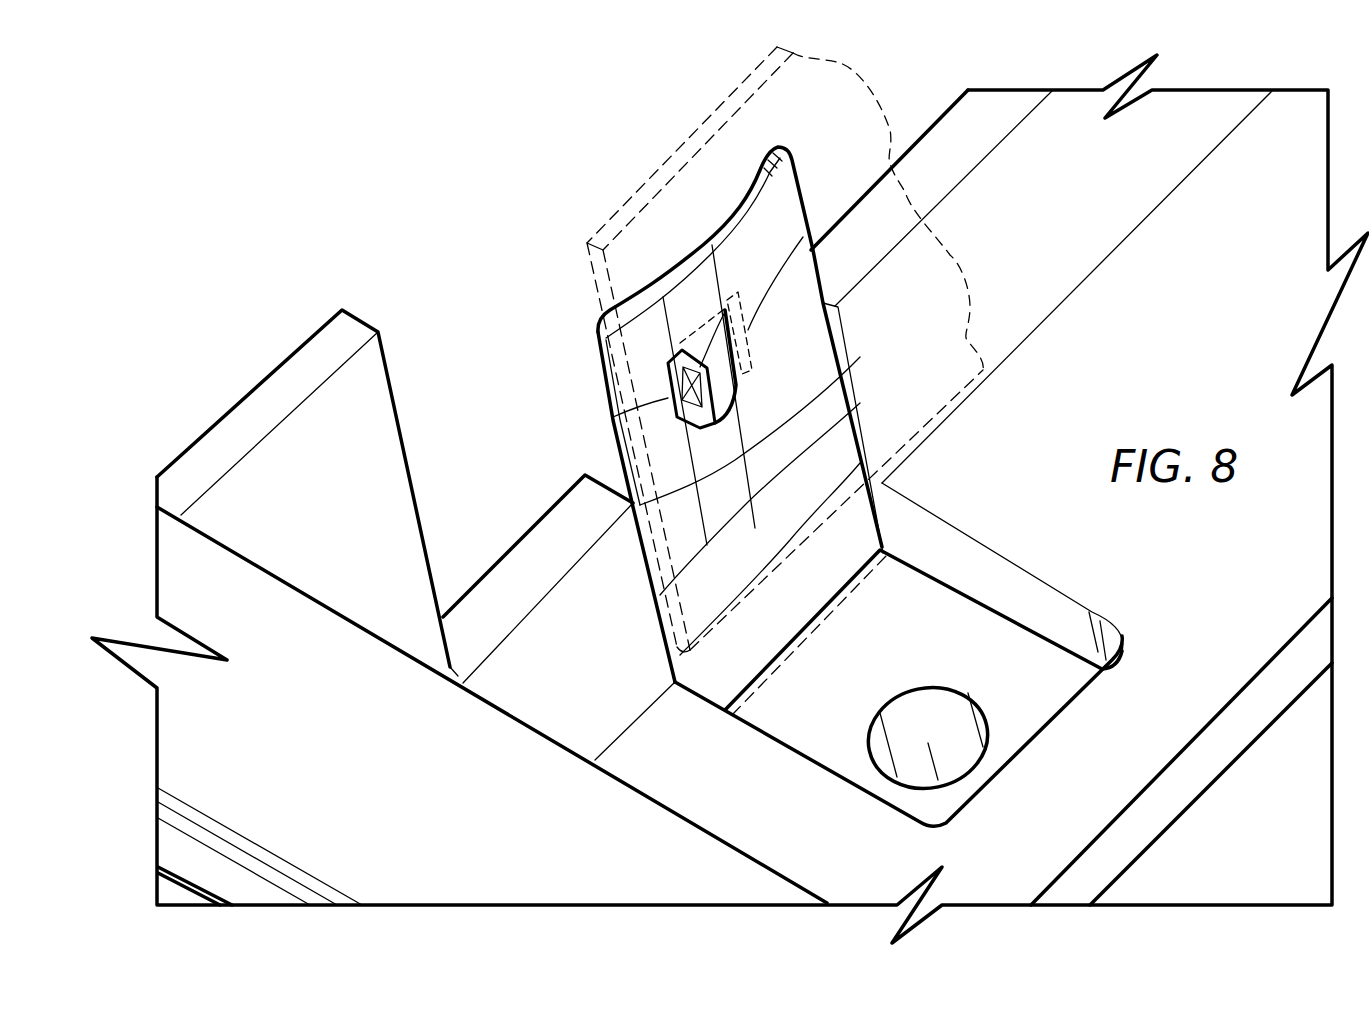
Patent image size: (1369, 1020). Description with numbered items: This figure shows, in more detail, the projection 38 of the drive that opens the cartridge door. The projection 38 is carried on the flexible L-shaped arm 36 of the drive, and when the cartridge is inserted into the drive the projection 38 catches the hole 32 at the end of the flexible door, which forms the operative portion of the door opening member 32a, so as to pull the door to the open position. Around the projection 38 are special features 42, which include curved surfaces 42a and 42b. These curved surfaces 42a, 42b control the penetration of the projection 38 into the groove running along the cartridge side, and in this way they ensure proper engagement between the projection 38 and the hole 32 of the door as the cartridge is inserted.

The special features 42 is at (696, 414).
The curved surface 42a is at (761, 217).
The curved surface 42b is at (637, 332).
The hole 32 is at (733, 310).
The door opening member 32a is at (677, 387).
The flexible L-shaped arm 36 is at (840, 482).
The projection 38 is at (685, 420).